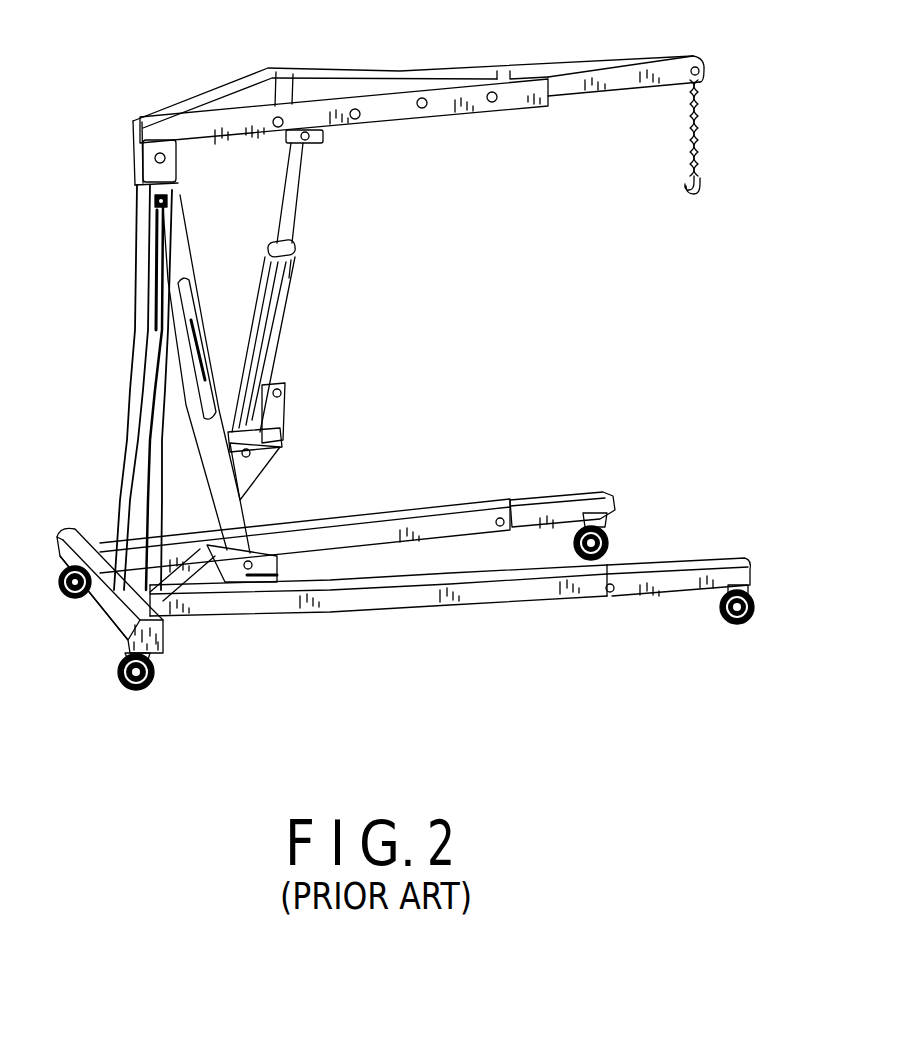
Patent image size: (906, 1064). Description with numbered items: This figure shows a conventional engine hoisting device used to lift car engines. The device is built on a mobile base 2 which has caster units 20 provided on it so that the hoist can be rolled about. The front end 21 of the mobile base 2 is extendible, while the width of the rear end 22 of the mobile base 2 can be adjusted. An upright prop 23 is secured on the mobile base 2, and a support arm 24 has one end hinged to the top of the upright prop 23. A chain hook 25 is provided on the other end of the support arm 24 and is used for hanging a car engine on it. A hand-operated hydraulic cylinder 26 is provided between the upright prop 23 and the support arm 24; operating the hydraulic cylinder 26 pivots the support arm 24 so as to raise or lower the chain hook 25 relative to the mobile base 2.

The mobile base 2 is at (297, 608).
The casters 20 is at (140, 690).
The front end 21 is at (635, 588).
The rear end 22 is at (163, 647).
The upright prop 23 is at (173, 240).
The support arm 24 is at (400, 100).
The chain hook 25 is at (707, 183).
The hand-operated hydraulic cylinder 26 is at (282, 273).